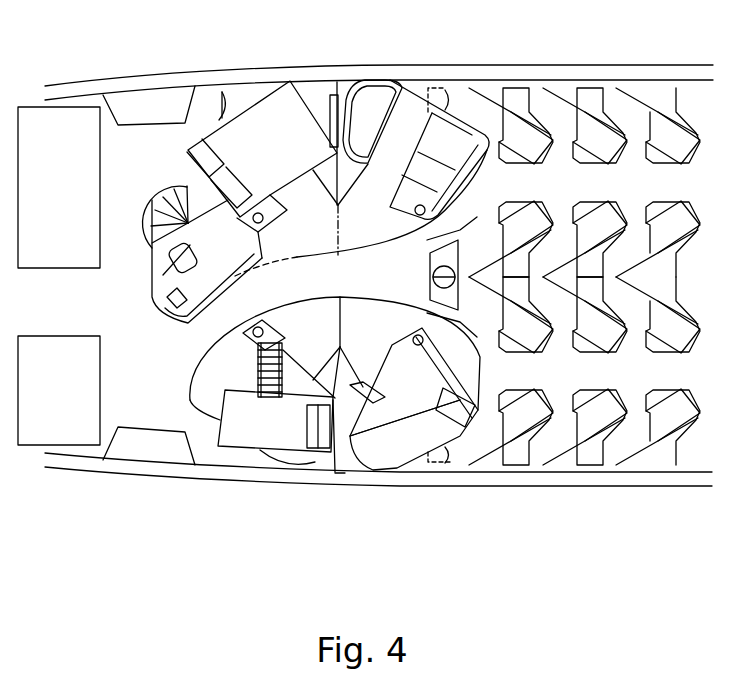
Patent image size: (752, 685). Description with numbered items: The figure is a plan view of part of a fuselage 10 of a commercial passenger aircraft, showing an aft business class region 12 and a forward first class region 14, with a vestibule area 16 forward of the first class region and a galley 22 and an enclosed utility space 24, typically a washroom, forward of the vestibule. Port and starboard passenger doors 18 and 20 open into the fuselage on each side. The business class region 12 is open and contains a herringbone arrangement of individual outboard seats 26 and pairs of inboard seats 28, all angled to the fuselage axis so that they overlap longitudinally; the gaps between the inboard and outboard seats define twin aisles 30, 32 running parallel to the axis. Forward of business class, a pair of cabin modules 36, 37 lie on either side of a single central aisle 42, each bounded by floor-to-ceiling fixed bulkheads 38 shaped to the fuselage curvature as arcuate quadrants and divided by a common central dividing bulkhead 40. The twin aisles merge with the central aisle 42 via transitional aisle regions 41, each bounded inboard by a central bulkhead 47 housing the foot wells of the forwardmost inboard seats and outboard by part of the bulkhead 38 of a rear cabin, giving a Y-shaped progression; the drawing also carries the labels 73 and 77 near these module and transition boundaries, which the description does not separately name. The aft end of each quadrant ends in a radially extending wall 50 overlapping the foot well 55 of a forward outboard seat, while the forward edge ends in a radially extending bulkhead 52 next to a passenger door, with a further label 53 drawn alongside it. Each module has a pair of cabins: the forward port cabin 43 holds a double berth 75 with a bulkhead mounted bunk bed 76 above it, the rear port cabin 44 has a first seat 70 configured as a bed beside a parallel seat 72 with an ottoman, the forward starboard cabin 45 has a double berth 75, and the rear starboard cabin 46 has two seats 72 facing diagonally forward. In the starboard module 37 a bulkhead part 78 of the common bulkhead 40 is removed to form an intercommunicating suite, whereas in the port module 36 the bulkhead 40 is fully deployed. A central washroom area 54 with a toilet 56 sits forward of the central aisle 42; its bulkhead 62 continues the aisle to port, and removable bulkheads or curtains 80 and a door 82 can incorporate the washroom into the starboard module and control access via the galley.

The fuselage 10 is at (584, 73).
The business class region 12 is at (543, 477).
The first class region 14 is at (340, 483).
The vestibule area 16 is at (126, 281).
The port passenger door 18 is at (145, 452).
The starboard passenger door 20 is at (135, 97).
The galley 22 is at (46, 163).
The enclosed utility space 24 is at (46, 406).
The outboard seat 26 is at (509, 148).
The inboard seat 28 is at (509, 238).
The aisle 30 is at (584, 383).
The aisle 32 is at (584, 196).
The port cabin module 36 is at (310, 467).
The starboard cabin module 37 is at (357, 80).
The fixed bulkhead 38 is at (381, 247).
The common central dividing bulkhead 40 is at (343, 177).
The transitional aisle region 41 is at (452, 277).
The central aisle 42 is at (328, 300).
The forward port cabin 43 is at (294, 343).
The rear port cabin 44 is at (357, 366).
The forward starboard cabin 45 is at (292, 215).
The rear starboard cabin 46 is at (359, 215).
The central bulkhead 47 is at (289, 302).
The radially extending wall 50 is at (461, 120).
The radially extending bulkhead 52 is at (210, 140).
The door leaf 53 is at (233, 125).
The central washroom area 54 is at (200, 281).
The foot well 55 is at (446, 108).
The toilet 56 is at (195, 255).
The bulkhead 62 is at (227, 294).
The first seat 70 is at (399, 441).
The seat 72 is at (435, 148).
The lounge seat 73 is at (367, 118).
The double berth 75 is at (249, 161).
The bunk bed 76 is at (253, 437).
The lower module outer wall 77 is at (474, 332).
The bulkhead part 78 is at (343, 232).
The removable bulkhead 80 is at (289, 258).
The door 82 is at (188, 223).